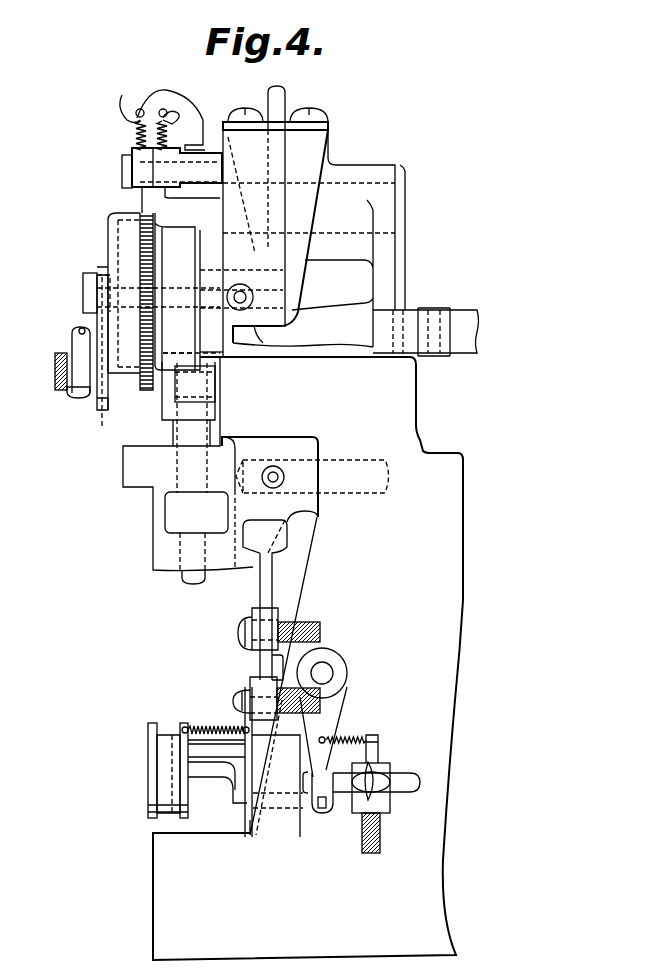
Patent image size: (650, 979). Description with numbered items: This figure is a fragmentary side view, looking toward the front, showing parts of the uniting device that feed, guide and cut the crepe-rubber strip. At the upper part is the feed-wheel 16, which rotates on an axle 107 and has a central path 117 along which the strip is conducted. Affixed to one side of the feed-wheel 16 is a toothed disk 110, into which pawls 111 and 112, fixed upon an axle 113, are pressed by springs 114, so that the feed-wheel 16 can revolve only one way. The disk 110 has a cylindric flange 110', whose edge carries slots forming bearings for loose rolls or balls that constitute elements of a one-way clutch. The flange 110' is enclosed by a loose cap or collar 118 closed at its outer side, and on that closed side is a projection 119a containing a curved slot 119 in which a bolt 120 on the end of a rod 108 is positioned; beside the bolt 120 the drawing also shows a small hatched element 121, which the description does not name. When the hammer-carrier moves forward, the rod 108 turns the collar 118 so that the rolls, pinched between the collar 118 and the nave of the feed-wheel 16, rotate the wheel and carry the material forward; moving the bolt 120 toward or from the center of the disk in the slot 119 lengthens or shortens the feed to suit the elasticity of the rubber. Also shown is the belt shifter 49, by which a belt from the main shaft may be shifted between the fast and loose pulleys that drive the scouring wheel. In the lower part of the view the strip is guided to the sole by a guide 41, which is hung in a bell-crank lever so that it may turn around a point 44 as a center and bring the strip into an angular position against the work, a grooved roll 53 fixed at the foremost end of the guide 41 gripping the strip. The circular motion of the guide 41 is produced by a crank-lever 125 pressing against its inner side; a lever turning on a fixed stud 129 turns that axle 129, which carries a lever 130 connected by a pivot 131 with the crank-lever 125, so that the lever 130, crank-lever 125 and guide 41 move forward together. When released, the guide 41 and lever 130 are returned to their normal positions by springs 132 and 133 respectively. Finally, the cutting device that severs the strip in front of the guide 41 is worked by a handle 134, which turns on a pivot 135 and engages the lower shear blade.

The springs 114 is at (137, 110).
The pawl 112 is at (162, 158).
The pawl 111 is at (140, 155).
The axle 113 is at (122, 176).
The toothed disk 110 is at (169, 298).
The cylindric flange 110' is at (105, 293).
The central path 117 is at (175, 291).
The feed-wheel 16 is at (158, 300).
The axle 107 is at (85, 280).
The projection 119a is at (97, 290).
The loose cap or collar 118 is at (120, 298).
The bolt 120 is at (80, 368).
The nut 121 is at (60, 390).
The rod 108 is at (82, 398).
The curved slot 119 is at (108, 360).
The belt shifter 49 is at (272, 583).
The fixed stud / axle 129 is at (330, 675).
The lever 130 is at (333, 710).
The spring 133 is at (350, 737).
The spring 132 is at (208, 727).
The guide 41 is at (165, 735).
The pivot 135 is at (378, 750).
The handle 134 is at (372, 798).
The crank-lever 125 is at (229, 795).
The pivot 131 is at (323, 812).
The grooved roll 53 is at (157, 820).
The point 44 is at (188, 822).